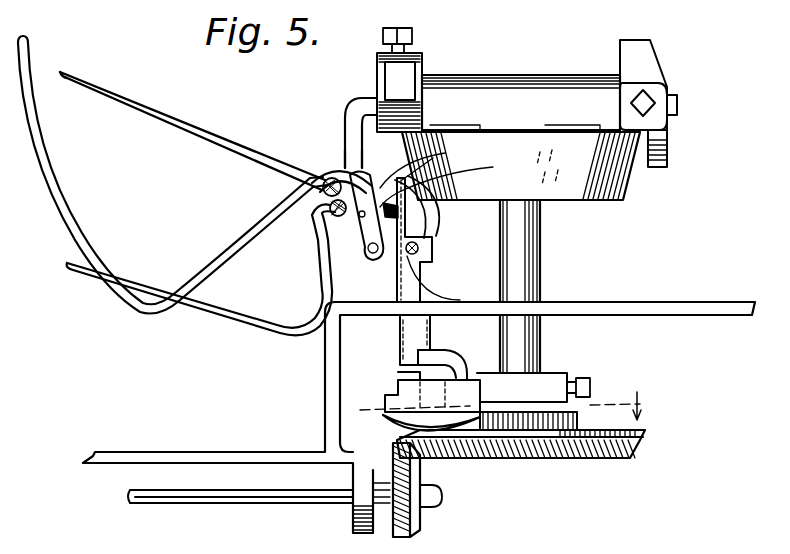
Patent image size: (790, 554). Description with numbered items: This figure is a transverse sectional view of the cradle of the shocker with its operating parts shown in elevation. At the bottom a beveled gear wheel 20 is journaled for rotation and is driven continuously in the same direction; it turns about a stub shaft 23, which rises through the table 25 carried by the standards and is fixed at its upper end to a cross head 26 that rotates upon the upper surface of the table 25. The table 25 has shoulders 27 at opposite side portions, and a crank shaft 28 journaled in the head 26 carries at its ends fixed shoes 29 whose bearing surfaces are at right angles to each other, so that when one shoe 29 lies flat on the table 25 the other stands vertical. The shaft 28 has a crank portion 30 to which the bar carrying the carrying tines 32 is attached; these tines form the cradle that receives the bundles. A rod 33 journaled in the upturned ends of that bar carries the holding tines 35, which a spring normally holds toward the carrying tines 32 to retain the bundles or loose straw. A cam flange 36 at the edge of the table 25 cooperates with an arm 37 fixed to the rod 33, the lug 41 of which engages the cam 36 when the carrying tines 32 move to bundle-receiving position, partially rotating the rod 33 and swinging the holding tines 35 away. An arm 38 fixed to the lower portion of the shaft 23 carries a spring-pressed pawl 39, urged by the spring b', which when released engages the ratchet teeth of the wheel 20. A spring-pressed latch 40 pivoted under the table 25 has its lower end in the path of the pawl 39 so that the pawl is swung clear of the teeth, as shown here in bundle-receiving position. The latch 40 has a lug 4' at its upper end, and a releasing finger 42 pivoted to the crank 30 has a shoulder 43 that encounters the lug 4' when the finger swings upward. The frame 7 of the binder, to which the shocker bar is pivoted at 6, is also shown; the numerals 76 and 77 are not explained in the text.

The frame of the binder 7 is at (633, 305).
The beveled gear wheel 20 is at (503, 462).
The stub shaft 23 is at (547, 280).
The table 25 is at (575, 200).
The cross head 26 is at (530, 72).
The shoulders 27 is at (417, 537).
The crank shaft 28 is at (353, 103).
The shoes 29 is at (418, 70).
The crank portion 30 is at (348, 150).
The carrying tines 32 is at (260, 322).
The rod 33 is at (323, 200).
The holding tines 35 is at (240, 150).
The cam flange 36 is at (450, 198).
The arm 37 is at (340, 217).
The arm 38 is at (540, 382).
The spring-pressed pawl 39 is at (447, 360).
The spring-pressed latch 40 is at (420, 220).
The lug 41 is at (383, 273).
The releasing finger 42 is at (257, 223).
The shoulder 43 is at (426, 166).
The lug 4' is at (445, 224).
The pivot 6 is at (502, 404).
The cutter blade 76 is at (403, 418).
The rod 77 is at (278, 503).
The spring b' is at (437, 396).